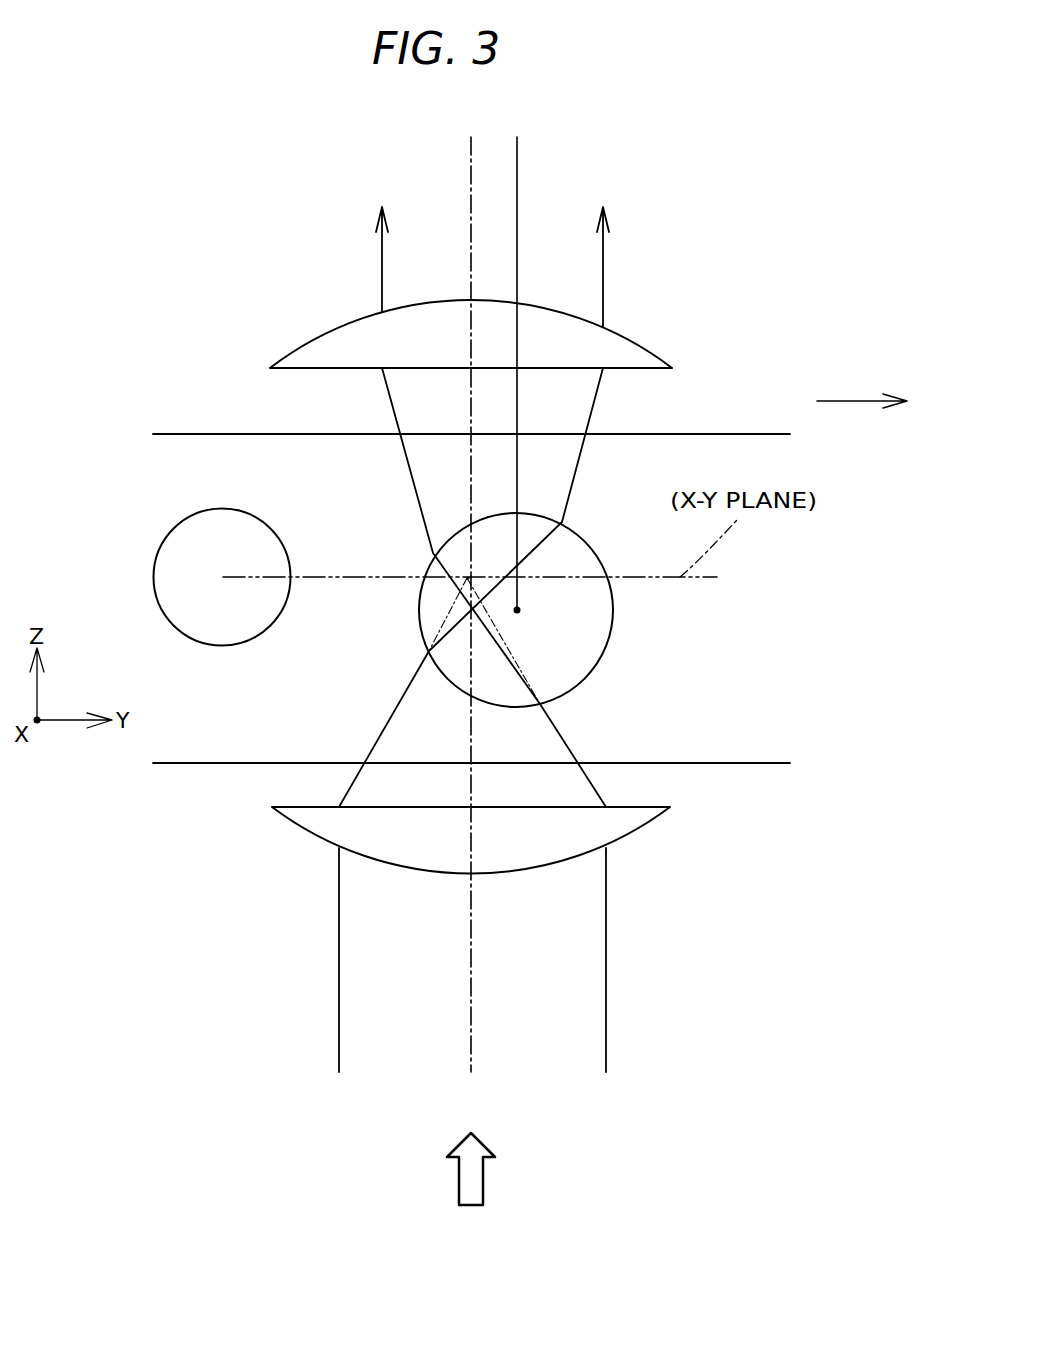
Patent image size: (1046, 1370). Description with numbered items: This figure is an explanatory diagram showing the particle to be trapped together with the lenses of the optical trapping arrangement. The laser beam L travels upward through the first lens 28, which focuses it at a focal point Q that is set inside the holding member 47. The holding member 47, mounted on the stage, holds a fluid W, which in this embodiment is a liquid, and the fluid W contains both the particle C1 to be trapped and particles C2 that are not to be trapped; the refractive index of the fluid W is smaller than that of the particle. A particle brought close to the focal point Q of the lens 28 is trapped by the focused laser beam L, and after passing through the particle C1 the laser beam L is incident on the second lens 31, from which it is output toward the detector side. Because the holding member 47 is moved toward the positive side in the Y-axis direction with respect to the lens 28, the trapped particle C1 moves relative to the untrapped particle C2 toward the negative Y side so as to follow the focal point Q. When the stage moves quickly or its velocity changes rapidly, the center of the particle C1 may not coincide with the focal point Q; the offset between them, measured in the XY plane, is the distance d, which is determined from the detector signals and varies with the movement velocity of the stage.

The second lens 31 is at (642, 343).
The first lens 28 is at (314, 834).
The holding member 47 is at (704, 784).
The laser beam L is at (605, 282).
The particle to be trapped C1 is at (607, 652).
The particle not to be trapped C2 is at (173, 527).
The focal point Q is at (470, 577).
The fluid W is at (298, 740).
The distance d is at (565, 144).